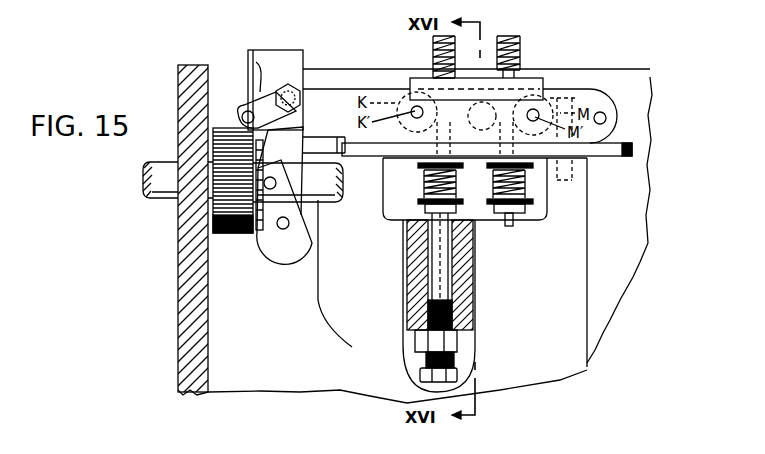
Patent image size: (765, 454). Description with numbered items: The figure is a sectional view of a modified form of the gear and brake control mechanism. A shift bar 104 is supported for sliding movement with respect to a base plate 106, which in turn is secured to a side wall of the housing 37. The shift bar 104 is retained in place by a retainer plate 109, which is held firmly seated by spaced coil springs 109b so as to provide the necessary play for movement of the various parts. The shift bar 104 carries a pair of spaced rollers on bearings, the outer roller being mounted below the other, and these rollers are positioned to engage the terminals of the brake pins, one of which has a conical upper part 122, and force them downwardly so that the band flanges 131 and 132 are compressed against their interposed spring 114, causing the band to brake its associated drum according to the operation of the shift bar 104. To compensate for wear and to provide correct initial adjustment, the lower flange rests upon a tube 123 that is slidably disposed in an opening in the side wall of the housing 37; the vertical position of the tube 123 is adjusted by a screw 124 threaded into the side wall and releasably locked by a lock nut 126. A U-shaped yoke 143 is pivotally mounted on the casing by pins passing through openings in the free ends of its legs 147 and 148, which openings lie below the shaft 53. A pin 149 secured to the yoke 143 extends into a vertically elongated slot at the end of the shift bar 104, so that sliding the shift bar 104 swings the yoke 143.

The housing 37 is at (615, 306).
The shaft 53 is at (166, 200).
The shift bar 104 is at (262, 50).
The base plate 106 is at (633, 152).
The retainer plate 109 is at (517, 85).
The coil springs 109b is at (433, 44).
The spring 114 is at (428, 179).
The conical upper part 122 is at (495, 128).
The tube 123 is at (440, 267).
The screw 124 is at (421, 376).
The lock nut 126 is at (458, 341).
The flange 131 is at (425, 165).
The flange 132 is at (418, 199).
The U-shaped yoke 143 is at (273, 261).
The leg 147 is at (256, 62).
The leg 148 is at (275, 235).
The pin 149 is at (243, 112).